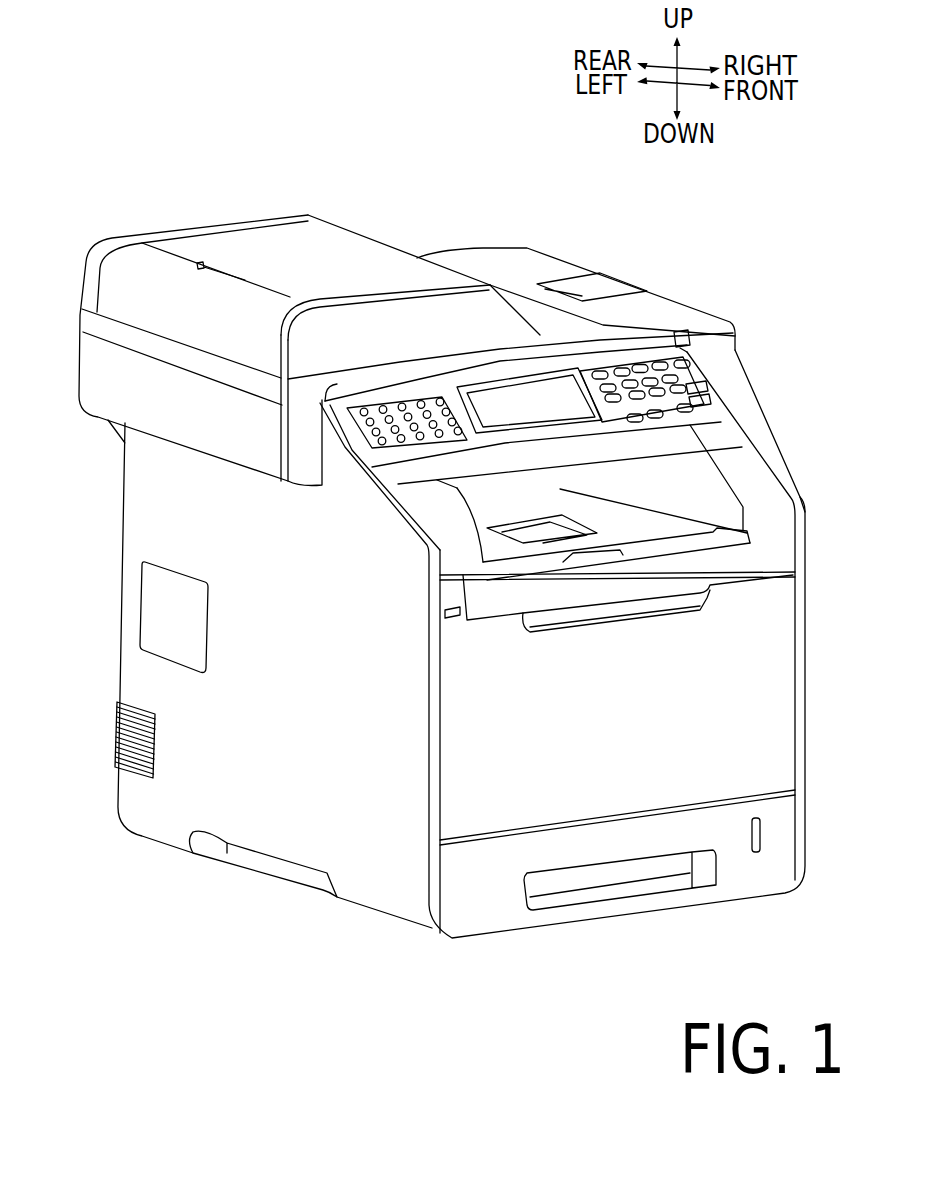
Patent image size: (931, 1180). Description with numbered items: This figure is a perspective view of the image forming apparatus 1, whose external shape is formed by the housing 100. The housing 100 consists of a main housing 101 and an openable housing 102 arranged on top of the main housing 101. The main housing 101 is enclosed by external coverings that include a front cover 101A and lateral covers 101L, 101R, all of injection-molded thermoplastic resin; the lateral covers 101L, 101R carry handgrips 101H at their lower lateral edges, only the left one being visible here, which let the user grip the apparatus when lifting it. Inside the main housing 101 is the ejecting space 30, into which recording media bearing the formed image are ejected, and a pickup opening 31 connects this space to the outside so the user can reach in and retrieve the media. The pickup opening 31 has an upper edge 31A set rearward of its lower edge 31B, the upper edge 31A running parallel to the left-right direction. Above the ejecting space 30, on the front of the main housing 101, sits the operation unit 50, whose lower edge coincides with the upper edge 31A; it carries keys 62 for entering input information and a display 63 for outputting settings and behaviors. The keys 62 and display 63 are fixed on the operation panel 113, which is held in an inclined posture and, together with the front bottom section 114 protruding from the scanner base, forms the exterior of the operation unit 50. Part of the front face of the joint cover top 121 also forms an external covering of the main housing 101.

The image forming apparatus 1 is at (735, 291).
The housing 100 is at (138, 164).
The main housing 101 is at (125, 495).
The openable housing 102 is at (145, 232).
The front cover 101A is at (625, 745).
The lateral cover 101L is at (380, 887).
The lateral cover 101R is at (808, 772).
The handgrip 101H is at (270, 860).
The operation panel 113 is at (433, 447).
The front bottom section 114 is at (605, 453).
The joint cover top 121 is at (758, 477).
The operation unit 50 is at (713, 408).
The keys 62 is at (690, 358).
The display 63 is at (547, 419).
The ejecting space 30 is at (532, 515).
The pickup opening 31 is at (641, 556).
The upper edge 31A is at (523, 463).
The lower edge 31B is at (664, 552).